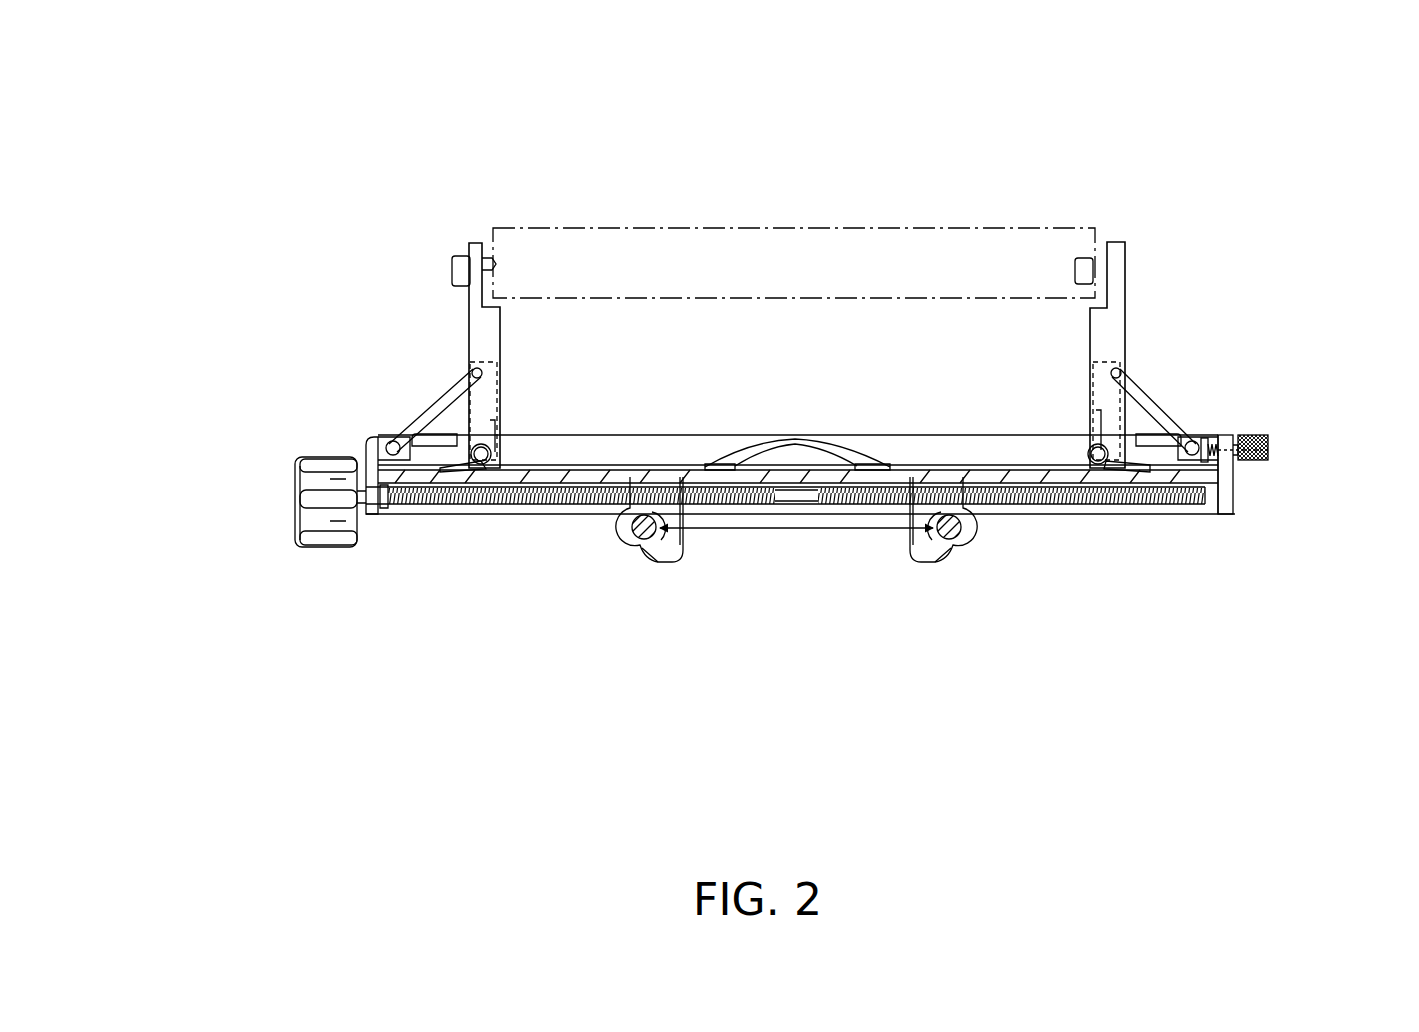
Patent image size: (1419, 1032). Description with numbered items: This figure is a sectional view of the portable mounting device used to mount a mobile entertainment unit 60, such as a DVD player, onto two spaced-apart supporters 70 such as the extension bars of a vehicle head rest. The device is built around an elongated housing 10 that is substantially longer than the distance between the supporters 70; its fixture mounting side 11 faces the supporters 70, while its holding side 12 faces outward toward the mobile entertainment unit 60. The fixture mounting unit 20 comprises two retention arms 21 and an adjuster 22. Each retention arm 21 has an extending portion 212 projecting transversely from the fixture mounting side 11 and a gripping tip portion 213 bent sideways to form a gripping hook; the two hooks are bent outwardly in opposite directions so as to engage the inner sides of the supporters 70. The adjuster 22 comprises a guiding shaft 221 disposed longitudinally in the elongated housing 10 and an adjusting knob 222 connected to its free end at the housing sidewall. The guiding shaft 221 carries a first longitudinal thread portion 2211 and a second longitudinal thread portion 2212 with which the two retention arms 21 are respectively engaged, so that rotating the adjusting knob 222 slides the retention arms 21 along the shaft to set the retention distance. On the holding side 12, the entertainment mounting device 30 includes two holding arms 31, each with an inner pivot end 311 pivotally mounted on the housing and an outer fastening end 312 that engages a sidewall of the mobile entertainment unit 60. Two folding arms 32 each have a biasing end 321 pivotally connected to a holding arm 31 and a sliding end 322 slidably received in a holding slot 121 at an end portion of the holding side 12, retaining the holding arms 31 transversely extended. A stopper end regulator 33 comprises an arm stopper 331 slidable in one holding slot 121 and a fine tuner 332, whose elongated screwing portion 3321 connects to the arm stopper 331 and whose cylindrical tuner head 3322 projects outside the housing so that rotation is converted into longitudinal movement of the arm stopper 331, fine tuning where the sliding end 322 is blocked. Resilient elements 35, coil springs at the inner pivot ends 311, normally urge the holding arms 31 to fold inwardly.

The elongated housing 10 is at (592, 455).
The fixture mounting side 11 is at (476, 523).
The holding side 12 is at (869, 433).
The holding slot 121 is at (420, 449).
The fixture mounting unit 20 is at (1203, 550).
The retention arm 21 is at (670, 557).
The extending portion 212 is at (670, 512).
The gripping tip portion 213 is at (642, 561).
The adjuster 22 is at (212, 520).
The guiding shaft 221 is at (1158, 511).
The first longitudinal thread portion 2211 is at (542, 506).
The second longitudinal thread portion 2212 is at (1063, 507).
The adjusting knob 222 is at (323, 475).
The entertainment mounting device 30 is at (338, 303).
The holding arm 31 is at (493, 333).
The inner pivot end 311 is at (482, 423).
The outer fastening end 312 is at (477, 241).
The folding arm 32 is at (442, 395).
The biasing end 321 is at (467, 371).
The sliding end 322 is at (389, 437).
The stopper end regulator 33 is at (1264, 482).
The arm stopper 331 is at (1208, 440).
The fine tuner 332 is at (1296, 447).
The elongated screwing portion 3321 is at (1269, 453).
The cylindrical tuner head 3322 is at (1219, 458).
The resilient element 35 is at (492, 458).
The mobile entertainment unit 60 is at (918, 255).
The supporter 70 is at (628, 545).